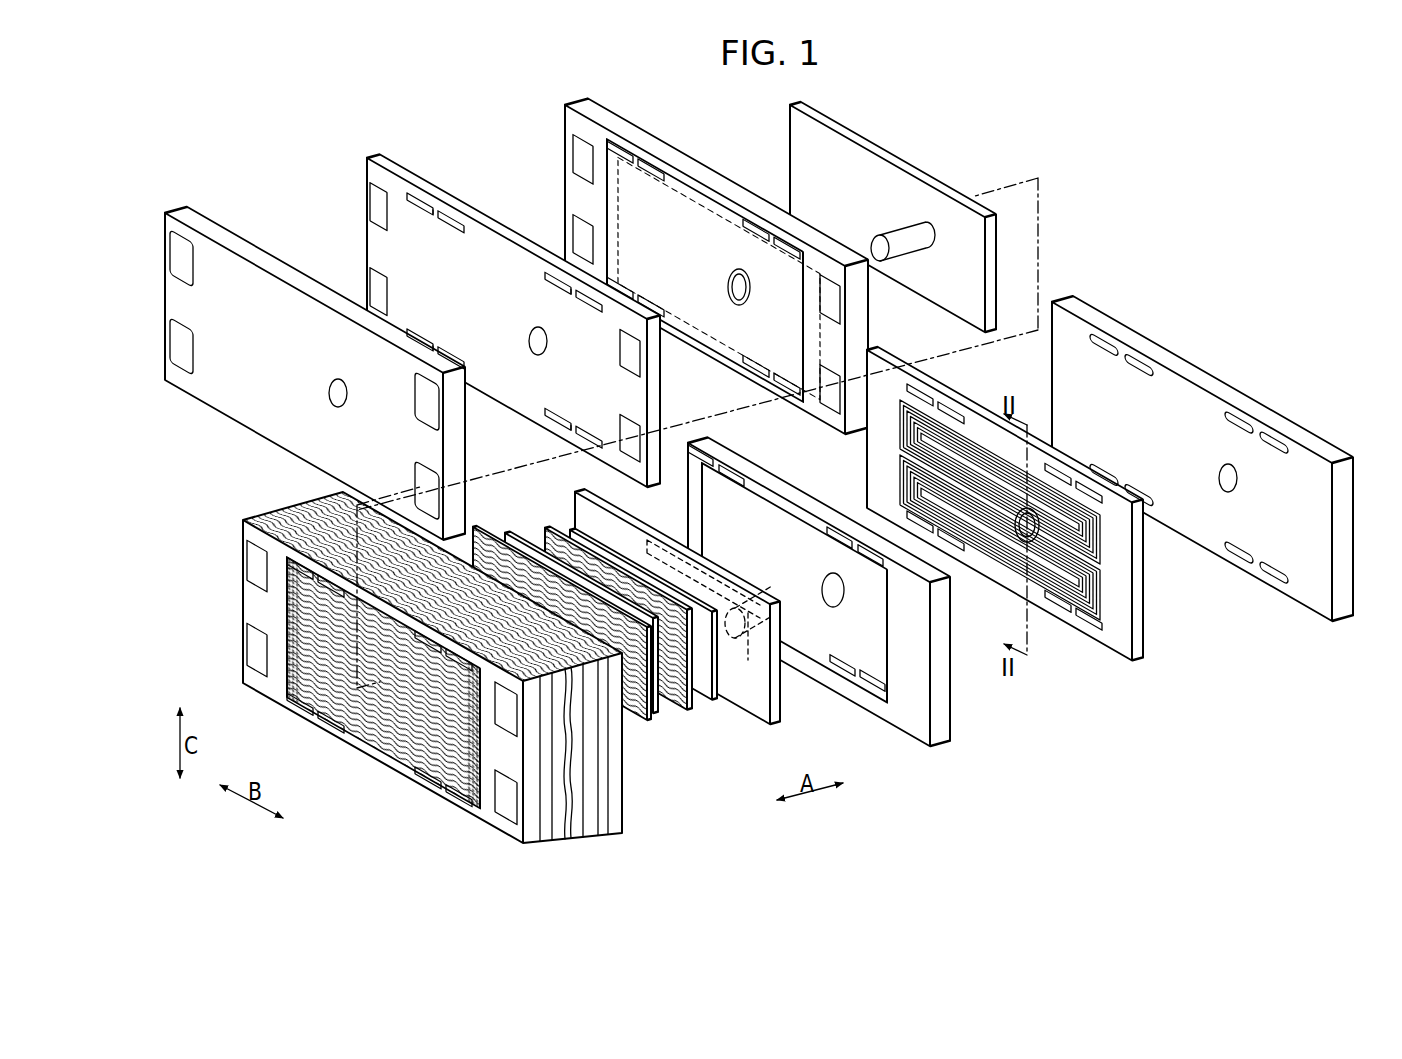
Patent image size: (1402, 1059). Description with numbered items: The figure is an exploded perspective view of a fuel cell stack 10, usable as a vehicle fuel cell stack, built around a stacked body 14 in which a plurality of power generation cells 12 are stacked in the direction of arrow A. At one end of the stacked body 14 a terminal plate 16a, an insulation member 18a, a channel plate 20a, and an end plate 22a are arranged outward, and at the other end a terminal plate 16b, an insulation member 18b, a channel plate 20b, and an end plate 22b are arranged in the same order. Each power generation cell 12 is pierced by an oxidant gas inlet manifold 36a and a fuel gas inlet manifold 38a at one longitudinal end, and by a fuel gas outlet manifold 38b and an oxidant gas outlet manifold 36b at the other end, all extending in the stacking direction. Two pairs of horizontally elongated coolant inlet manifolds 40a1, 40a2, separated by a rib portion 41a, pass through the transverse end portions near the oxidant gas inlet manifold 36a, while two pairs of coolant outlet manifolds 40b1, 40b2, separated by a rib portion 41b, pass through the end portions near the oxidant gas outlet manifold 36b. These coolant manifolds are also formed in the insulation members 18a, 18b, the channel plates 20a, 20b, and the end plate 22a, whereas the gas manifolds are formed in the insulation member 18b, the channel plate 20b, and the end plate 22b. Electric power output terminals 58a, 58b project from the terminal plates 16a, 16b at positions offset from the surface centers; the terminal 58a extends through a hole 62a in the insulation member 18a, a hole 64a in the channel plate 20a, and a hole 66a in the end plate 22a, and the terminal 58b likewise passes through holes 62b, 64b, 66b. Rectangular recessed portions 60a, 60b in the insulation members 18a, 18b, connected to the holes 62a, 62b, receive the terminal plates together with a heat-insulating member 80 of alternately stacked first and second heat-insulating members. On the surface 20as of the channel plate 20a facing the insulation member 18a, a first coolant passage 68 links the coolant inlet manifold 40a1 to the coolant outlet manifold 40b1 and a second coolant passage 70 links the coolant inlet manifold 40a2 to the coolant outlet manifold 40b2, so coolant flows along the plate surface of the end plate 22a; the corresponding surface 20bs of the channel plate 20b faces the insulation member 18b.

The fuel cell stack 10 is at (1242, 226).
The power generation cell 12 is at (612, 782).
The stacked body 14 is at (688, 779).
The terminal plate 16a is at (762, 720).
The terminal plate 16b is at (788, 114).
The insulation member 18a is at (942, 742).
The insulation member 18b is at (563, 113).
The channel plate 20a is at (1133, 675).
The channel plate 20b is at (369, 155).
The surface of channel plate 20as is at (1120, 645).
The surface of channel plate 20bs is at (492, 247).
The end plate 22a is at (1332, 624).
The end plate 22b is at (181, 208).
The oxidant gas inlet manifold 36a is at (183, 247).
The oxidant gas outlet manifold 36b is at (427, 480).
The fuel gas inlet manifold 38a is at (380, 277).
The fuel gas outlet manifold 38b is at (427, 408).
The coolant inlet manifold 40a1 is at (423, 207).
The coolant inlet manifold 40a2 is at (450, 223).
The coolant outlet manifold 40b1 is at (555, 287).
The coolant outlet manifold 40b2 is at (597, 310).
The rib portion 41a is at (433, 218).
The rib portion 41b is at (577, 299).
The electric power output terminal 58a is at (709, 615).
The electric power output terminal 58b is at (890, 235).
The recessed portion 60a is at (878, 640).
The recessed portion 60b is at (625, 200).
The hole 62a is at (829, 592).
The hole 62b is at (750, 290).
The hole 64a is at (1020, 543).
The hole 64b is at (530, 352).
The hole 66a is at (1224, 490).
The hole 66b is at (330, 400).
The first coolant passage 68 is at (902, 436).
The second coolant passage 70 is at (1097, 572).
The heat-insulating member 80 is at (703, 753).